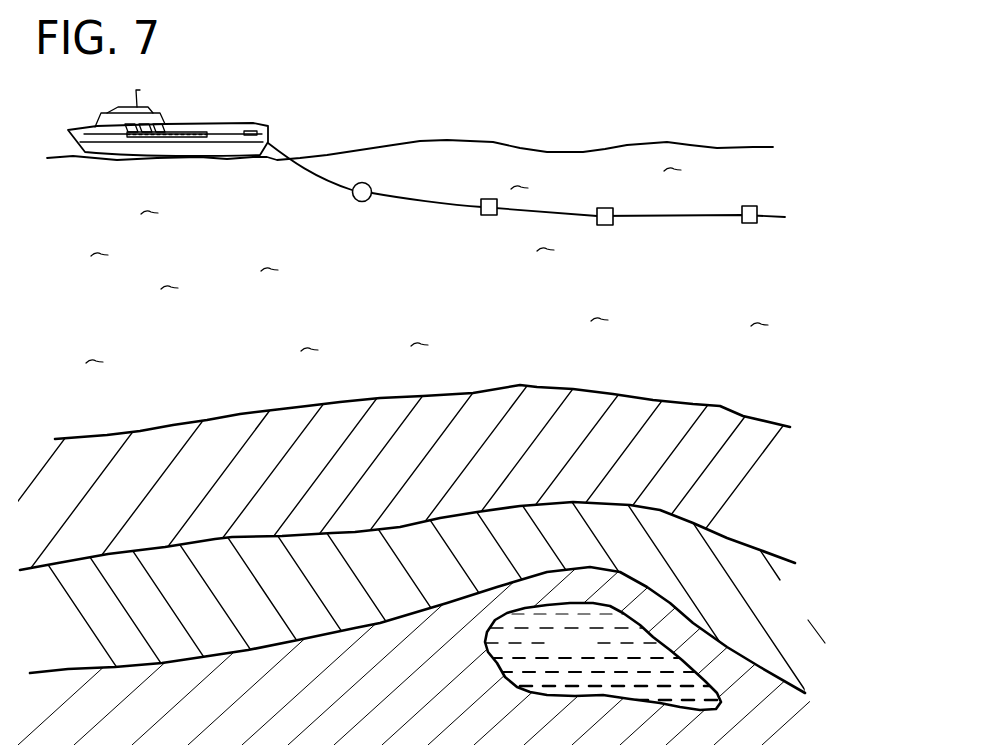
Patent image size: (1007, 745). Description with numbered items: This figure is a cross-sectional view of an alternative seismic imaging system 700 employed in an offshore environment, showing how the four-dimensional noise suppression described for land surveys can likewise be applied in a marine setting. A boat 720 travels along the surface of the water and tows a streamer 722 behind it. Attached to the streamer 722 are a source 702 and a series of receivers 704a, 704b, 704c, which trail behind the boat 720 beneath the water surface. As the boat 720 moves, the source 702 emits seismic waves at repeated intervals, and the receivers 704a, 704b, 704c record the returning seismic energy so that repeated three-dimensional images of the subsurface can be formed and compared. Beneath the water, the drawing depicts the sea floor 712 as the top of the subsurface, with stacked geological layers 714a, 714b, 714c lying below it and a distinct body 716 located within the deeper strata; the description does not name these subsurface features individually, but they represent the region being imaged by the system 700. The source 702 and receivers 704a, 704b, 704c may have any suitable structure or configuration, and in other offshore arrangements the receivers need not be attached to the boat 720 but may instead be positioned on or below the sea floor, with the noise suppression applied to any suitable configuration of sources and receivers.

The seismic imaging system 700 is at (631, 373).
The source 702 is at (356, 201).
The receiver 704a is at (489, 216).
The receiver 704b is at (607, 227).
The receiver 704c is at (747, 225).
The sea floor / top surface of formation 712 is at (707, 404).
The first subsurface layer 714a is at (788, 478).
The second subsurface layer 714b is at (810, 620).
The third subsurface layer 714c is at (810, 736).
The hydrocarbon reservoir 716 is at (593, 655).
The boat 720 is at (235, 121).
The streamer 722 is at (318, 172).